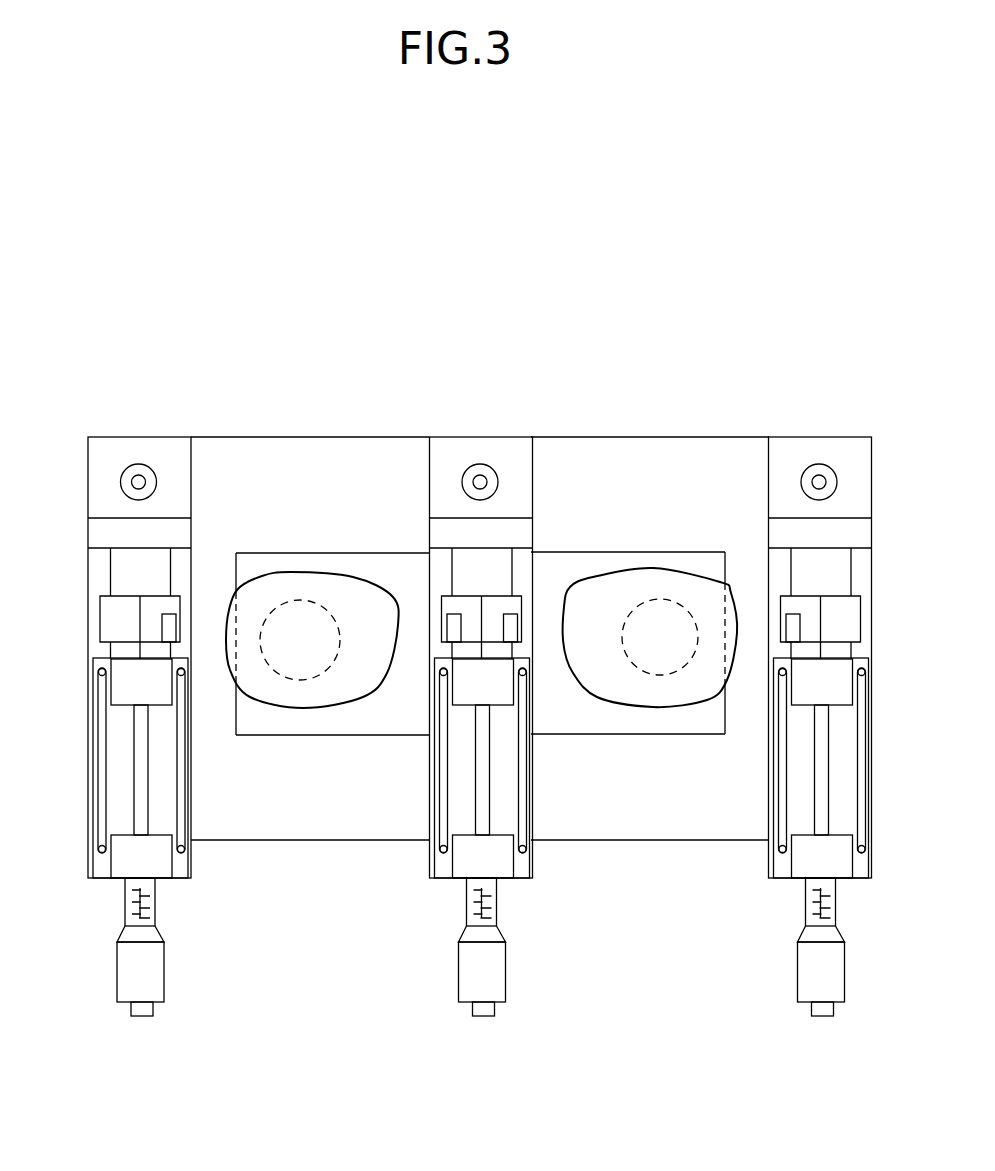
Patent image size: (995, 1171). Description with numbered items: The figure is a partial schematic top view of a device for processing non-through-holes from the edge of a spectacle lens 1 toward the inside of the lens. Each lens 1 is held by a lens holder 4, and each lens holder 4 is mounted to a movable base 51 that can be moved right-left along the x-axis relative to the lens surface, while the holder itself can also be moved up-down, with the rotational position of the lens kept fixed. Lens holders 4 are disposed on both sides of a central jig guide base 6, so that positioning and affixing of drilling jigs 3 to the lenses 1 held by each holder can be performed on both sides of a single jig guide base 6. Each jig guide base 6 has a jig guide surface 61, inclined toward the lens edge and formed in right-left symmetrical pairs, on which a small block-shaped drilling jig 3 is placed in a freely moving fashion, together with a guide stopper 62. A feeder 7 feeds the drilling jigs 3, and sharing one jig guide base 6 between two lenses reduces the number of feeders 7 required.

The spectacle lens 1 is at (308, 708).
The drilling jig 3 is at (170, 622).
The lens holder 4 is at (308, 610).
The movable base 51 is at (380, 553).
The jig guide base 6 is at (83, 652).
The jig guide surface 61 is at (113, 612).
The guide stopper 62 is at (122, 650).
The feeder 7 is at (103, 907).